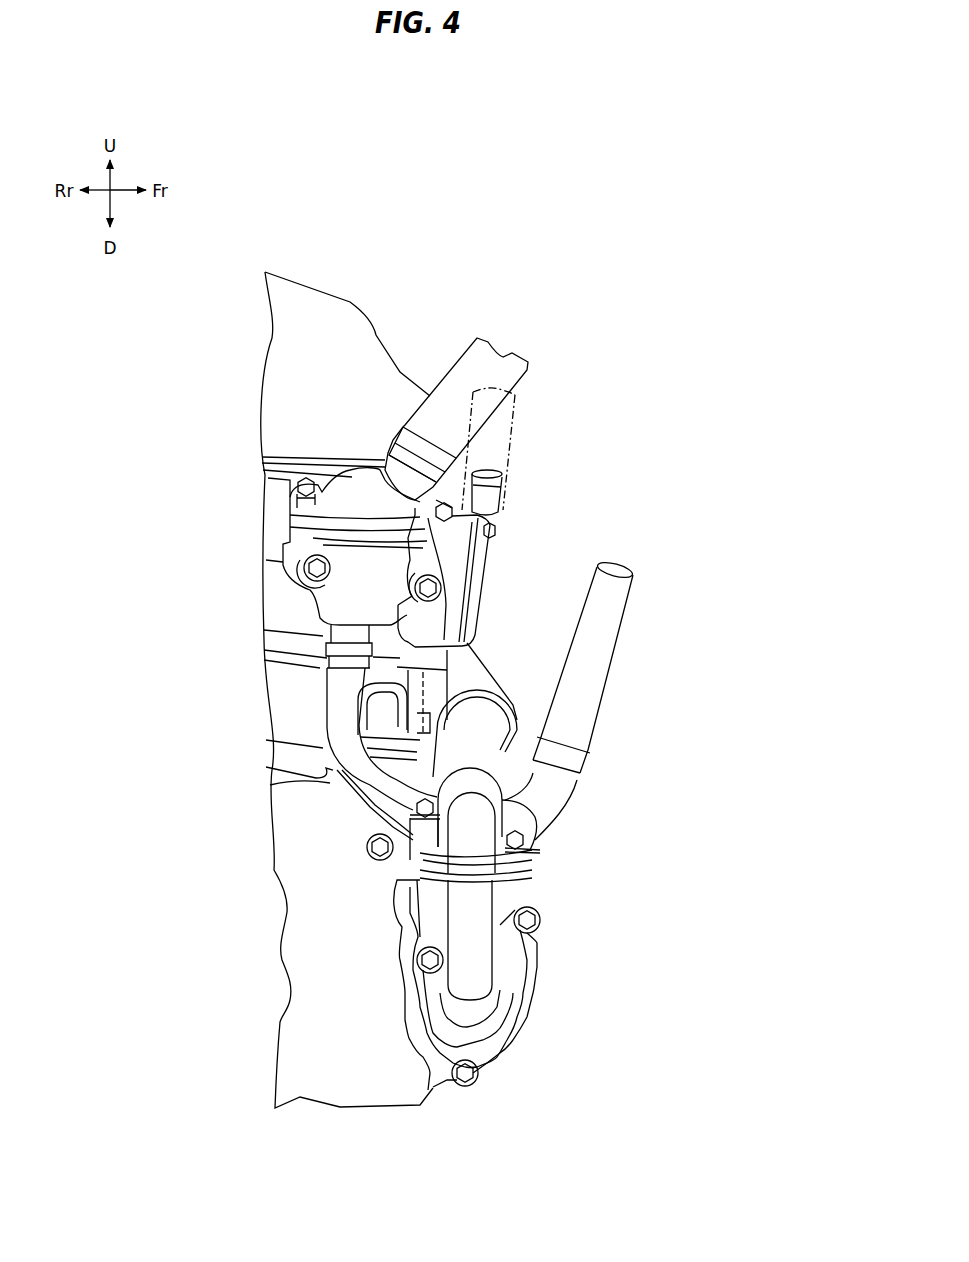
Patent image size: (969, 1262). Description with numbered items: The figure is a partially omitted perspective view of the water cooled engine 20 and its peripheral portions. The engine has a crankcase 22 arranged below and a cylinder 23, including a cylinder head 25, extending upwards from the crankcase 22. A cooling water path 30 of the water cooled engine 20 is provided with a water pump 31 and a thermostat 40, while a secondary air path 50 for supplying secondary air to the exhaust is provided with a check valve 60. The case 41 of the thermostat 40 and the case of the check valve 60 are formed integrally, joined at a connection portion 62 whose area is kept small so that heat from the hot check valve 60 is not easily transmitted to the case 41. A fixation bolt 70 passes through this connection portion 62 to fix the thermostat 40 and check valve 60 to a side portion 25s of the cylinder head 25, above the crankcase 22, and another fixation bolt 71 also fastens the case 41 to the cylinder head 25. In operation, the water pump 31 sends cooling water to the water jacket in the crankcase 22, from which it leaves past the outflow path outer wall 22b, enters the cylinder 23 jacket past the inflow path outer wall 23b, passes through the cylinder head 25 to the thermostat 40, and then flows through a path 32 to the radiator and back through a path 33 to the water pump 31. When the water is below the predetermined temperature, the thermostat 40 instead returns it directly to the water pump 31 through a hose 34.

The water cooled engine 20 is at (320, 290).
The crankcase 22 is at (268, 857).
The outflow path outer wall 22b is at (322, 764).
The cylinder 23 is at (283, 670).
The inflow path outer wall 23b is at (380, 713).
The cylinder head 25 is at (280, 617).
The side portion of the cylinder head 25s is at (277, 583).
The cooling water path 30 is at (527, 372).
The water pump 31 is at (503, 997).
The path leading to a radiator 32 is at (503, 357).
The path leading from the radiator to the water pump 33 is at (487, 957).
The hose 34 is at (340, 730).
The thermostat 40 is at (284, 508).
The case of the thermostat 41 is at (347, 550).
The secondary air path 50 is at (513, 433).
The check valve 60 is at (477, 598).
The connection portion 62 is at (415, 612).
The fixation bolt 70 is at (436, 585).
The fixation bolt 71 is at (309, 569).